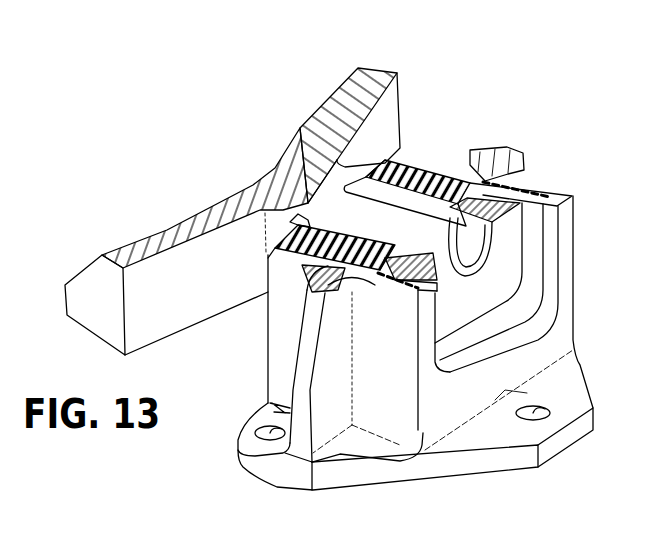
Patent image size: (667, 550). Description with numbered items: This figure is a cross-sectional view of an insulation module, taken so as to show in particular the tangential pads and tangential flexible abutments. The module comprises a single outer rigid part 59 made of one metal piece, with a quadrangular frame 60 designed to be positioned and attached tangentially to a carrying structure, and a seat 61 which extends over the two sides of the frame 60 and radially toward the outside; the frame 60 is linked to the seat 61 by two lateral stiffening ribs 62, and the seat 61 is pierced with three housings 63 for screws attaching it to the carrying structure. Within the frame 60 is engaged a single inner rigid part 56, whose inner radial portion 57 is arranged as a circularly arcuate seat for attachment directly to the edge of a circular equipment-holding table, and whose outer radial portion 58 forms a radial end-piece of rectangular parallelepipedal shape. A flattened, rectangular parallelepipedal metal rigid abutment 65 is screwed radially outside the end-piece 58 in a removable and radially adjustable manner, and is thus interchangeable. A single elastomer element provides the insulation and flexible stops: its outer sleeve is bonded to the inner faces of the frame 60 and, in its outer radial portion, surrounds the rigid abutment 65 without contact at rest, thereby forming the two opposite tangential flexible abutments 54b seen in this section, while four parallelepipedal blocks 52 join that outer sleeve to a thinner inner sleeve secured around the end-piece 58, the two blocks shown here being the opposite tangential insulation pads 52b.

The parallelepipedal blocks 52 is at (337, 238).
The tangential insulation pads 52b is at (483, 157).
The tangential flexible abutments 54b is at (540, 186).
The inner rigid part 56 is at (415, 90).
The inner radial portion 57 is at (142, 248).
The outer radial portion 58 is at (420, 150).
The outer rigid part 59 is at (585, 273).
The quadrangular frame 60 is at (575, 222).
The seat 61 is at (568, 388).
The lateral stiffening ribs 62 is at (522, 170).
The housings 63 is at (241, 430).
The rigid abutment 65 is at (498, 283).